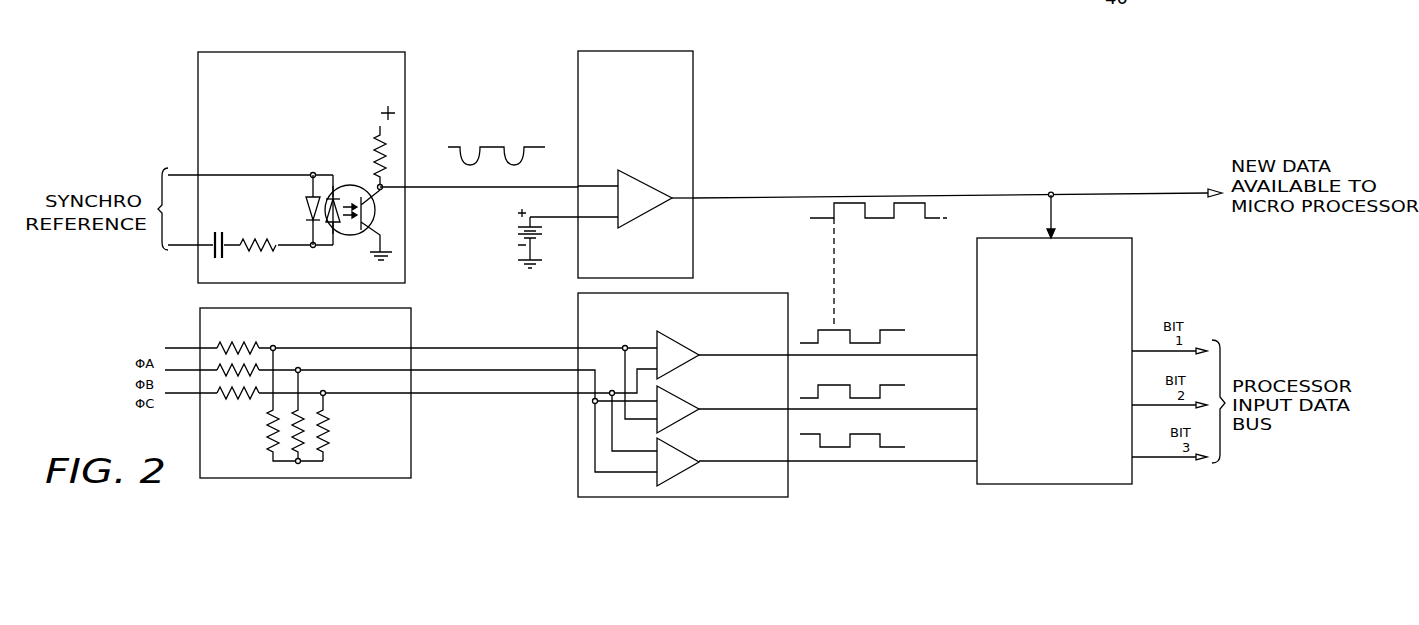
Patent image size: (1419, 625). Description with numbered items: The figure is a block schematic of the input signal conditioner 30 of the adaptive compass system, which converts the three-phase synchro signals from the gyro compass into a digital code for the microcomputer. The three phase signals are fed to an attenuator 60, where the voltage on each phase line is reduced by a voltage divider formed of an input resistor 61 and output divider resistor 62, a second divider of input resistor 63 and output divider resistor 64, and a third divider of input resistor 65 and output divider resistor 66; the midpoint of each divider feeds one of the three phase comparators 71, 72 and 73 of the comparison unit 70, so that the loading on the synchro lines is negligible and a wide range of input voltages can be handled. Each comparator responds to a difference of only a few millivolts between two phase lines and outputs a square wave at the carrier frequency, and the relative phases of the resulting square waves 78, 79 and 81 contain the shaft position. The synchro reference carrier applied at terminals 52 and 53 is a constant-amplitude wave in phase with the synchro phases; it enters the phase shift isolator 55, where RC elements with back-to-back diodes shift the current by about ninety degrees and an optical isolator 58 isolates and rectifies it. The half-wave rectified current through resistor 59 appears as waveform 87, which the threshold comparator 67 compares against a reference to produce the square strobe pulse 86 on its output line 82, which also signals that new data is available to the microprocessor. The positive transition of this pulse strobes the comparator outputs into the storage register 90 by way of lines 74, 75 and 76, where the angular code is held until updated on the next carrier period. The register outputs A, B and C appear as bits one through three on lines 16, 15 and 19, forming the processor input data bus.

The input signal conditioner 30 is at (796, 125).
The reference input terminal 52 is at (180, 175).
The reference input terminal 53 is at (188, 248).
The phase shift isolator 55 is at (328, 52).
The optical isolator 58 is at (350, 180).
The resistor 59 is at (375, 156).
The attenuator 60 is at (413, 322).
The input resistor 61 is at (227, 347).
The output divider resistor 62 is at (266, 428).
The input resistor 63 is at (257, 368).
The output divider resistor 64 is at (293, 437).
The input resistor 65 is at (237, 398).
The output divider resistor 66 is at (329, 436).
The threshold comparator 67 is at (631, 51).
The comparison unit 70 is at (760, 293).
The phase comparator 71 is at (692, 344).
The phase comparator 72 is at (688, 398).
The phase comparator 73 is at (688, 448).
The line 74 is at (944, 354).
The line 75 is at (949, 405).
The line 76 is at (951, 457).
The square wave 78 is at (841, 329).
The square wave 79 is at (842, 393).
The square wave 81 is at (864, 433).
The line 82 is at (775, 197).
The square strobe pulse 86 is at (855, 198).
The waveform 87 is at (491, 146).
The storage register 90 is at (1134, 260).
The output line 16 is at (1140, 355).
The output line 15 is at (1141, 409).
The output line 19 is at (1145, 465).